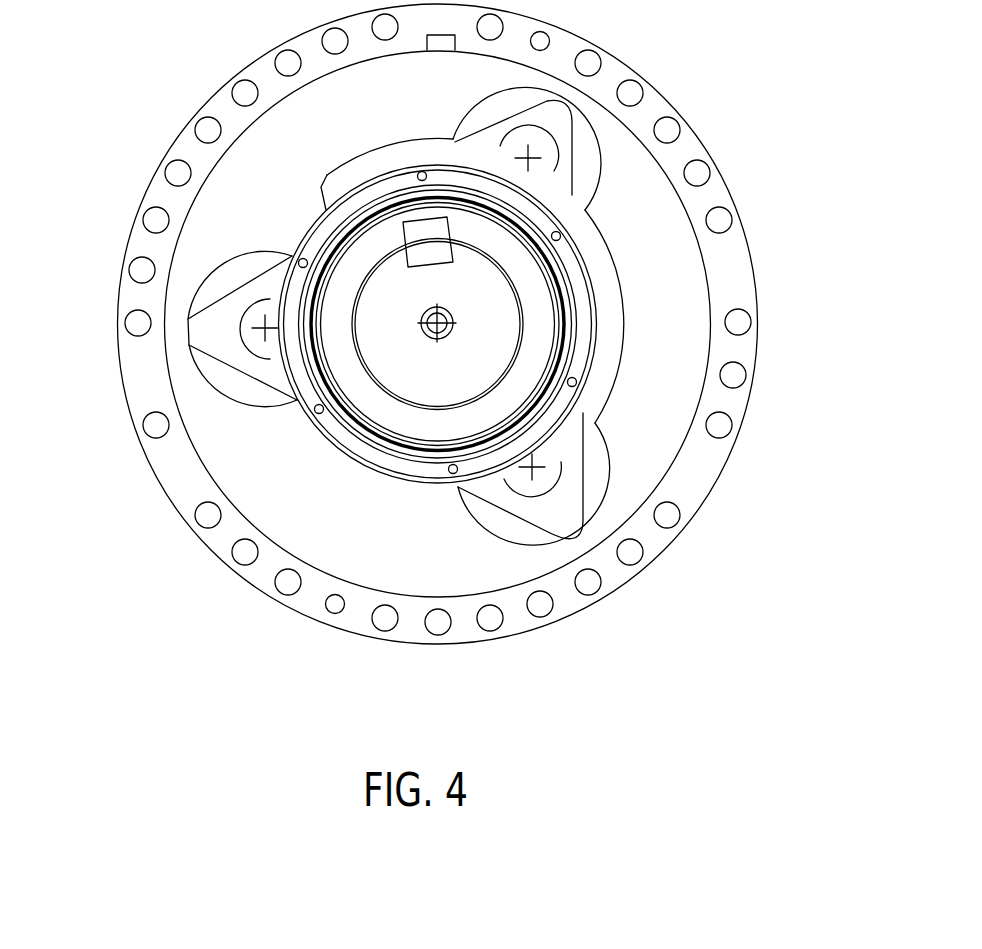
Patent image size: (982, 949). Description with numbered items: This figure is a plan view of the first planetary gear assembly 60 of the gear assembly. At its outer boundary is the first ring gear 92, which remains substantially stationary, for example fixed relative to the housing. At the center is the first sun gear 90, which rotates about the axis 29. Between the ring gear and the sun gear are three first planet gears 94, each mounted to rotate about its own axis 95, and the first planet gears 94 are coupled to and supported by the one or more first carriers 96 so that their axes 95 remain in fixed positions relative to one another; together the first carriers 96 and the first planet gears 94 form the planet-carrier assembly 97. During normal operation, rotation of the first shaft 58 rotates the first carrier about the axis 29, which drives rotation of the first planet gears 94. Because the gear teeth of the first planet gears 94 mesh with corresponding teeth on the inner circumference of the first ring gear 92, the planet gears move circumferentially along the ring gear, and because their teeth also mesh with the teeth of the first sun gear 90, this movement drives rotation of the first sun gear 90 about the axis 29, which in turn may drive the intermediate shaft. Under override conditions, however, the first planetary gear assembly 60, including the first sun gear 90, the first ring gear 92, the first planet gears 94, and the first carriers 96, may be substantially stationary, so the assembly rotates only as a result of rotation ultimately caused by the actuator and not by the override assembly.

The first planetary gear assembly 60 is at (774, 138).
The first ring gear 92 is at (702, 465).
The planet-carrier assembly 97 is at (275, 176).
The first shaft 58 is at (506, 333).
The first sun gear 90 is at (397, 368).
The axis 29 is at (421, 324).
The first planet gears 94 is at (607, 450).
The first carriers 96 is at (245, 383).
The axes 95 is at (264, 325).